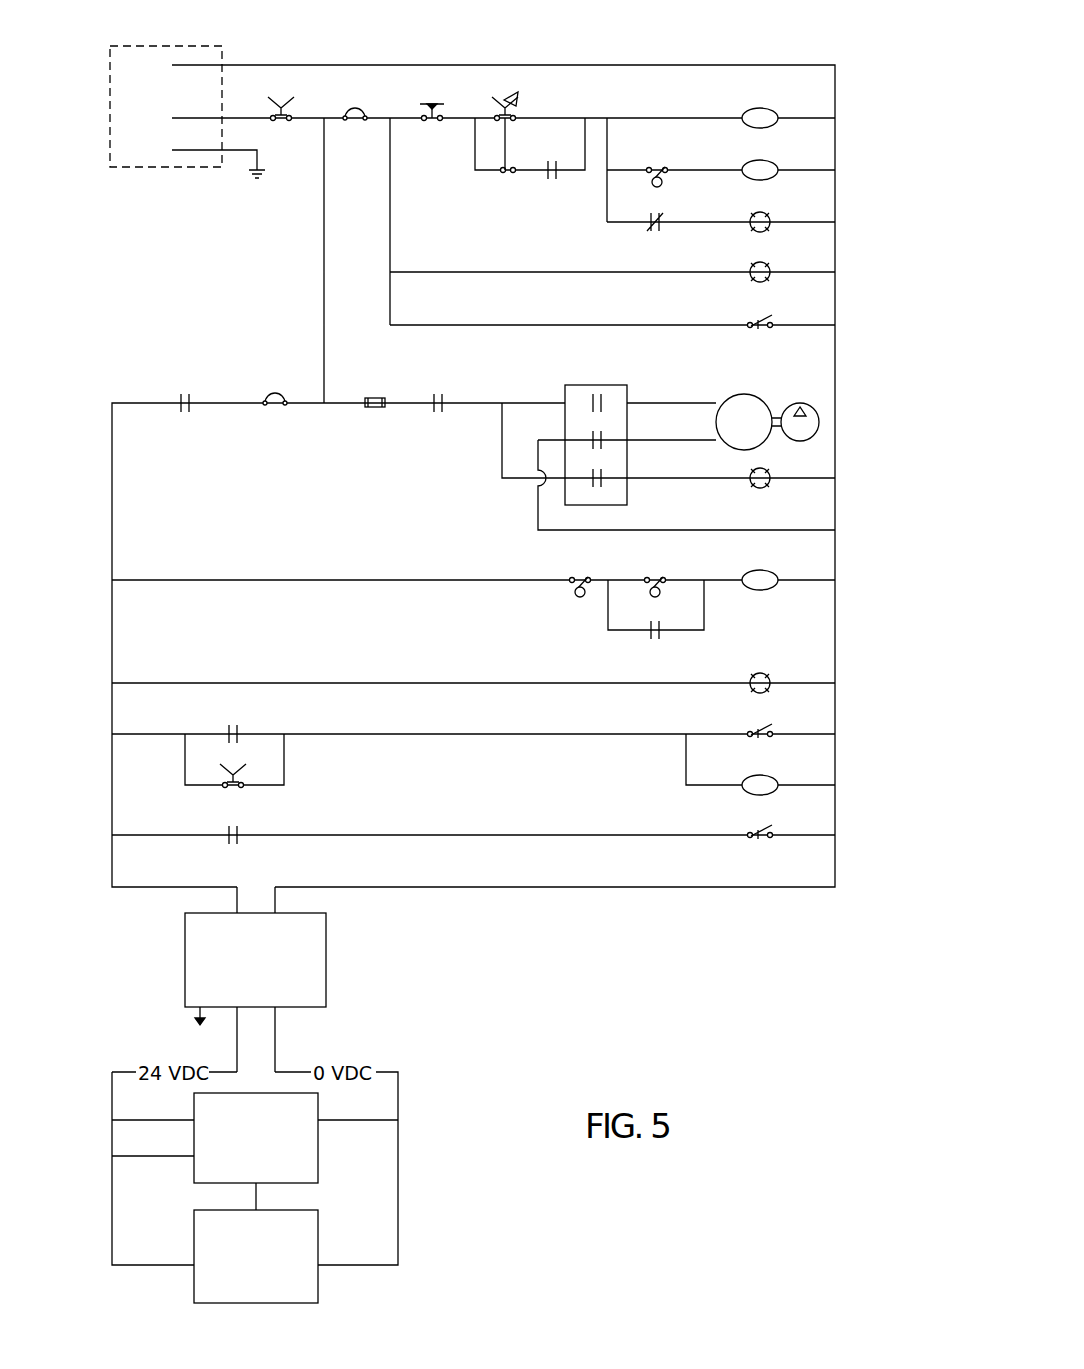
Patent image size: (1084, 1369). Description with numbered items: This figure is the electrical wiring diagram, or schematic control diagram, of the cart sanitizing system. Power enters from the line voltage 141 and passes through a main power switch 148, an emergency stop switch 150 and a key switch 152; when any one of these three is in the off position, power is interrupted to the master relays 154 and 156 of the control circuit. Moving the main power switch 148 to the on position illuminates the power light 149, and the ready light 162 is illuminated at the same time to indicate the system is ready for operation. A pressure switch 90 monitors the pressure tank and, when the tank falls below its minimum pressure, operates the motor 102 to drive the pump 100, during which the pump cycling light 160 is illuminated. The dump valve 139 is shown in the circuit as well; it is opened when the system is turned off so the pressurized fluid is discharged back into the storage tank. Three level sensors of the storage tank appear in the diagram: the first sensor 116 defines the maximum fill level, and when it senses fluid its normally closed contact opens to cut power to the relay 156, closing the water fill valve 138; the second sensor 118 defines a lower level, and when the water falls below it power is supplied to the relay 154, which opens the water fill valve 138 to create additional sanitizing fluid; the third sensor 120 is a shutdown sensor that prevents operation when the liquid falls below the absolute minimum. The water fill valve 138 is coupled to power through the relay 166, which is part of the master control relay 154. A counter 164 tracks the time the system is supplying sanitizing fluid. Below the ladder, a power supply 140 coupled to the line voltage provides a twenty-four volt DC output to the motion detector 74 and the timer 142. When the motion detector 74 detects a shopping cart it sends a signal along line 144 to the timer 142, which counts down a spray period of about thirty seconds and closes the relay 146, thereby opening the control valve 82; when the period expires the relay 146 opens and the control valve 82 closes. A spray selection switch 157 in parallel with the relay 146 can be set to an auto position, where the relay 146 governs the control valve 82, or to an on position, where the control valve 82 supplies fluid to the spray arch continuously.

The line voltage 141 is at (158, 46).
The main power switch 148 is at (290, 102).
The emergency stop switch 150 is at (434, 104).
The key switch 152 is at (510, 98).
The third sensor 120 is at (658, 166).
The master relay 154 is at (760, 108).
The master relay 156 is at (775, 162).
The power light 149 is at (770, 268).
The dump valve 139 is at (768, 322).
The pressure switch 90 is at (617, 385).
The motor 102 is at (745, 395).
The pump 100 is at (808, 405).
The pump cycling light 160 is at (772, 476).
The second sensor 118 is at (658, 577).
The first sensor 116 is at (578, 596).
The ready light 162 is at (760, 673).
The control valve 82 is at (767, 732).
The counter 164 is at (778, 778).
The relay 146 is at (237, 728).
The spray selection switch 157 is at (248, 777).
The relay 166 is at (236, 842).
The water fill valve 138 is at (760, 842).
The power supply 140 is at (328, 945).
The motion detector 74 is at (320, 1106).
The line 144 is at (258, 1195).
The timer 142 is at (294, 1303).